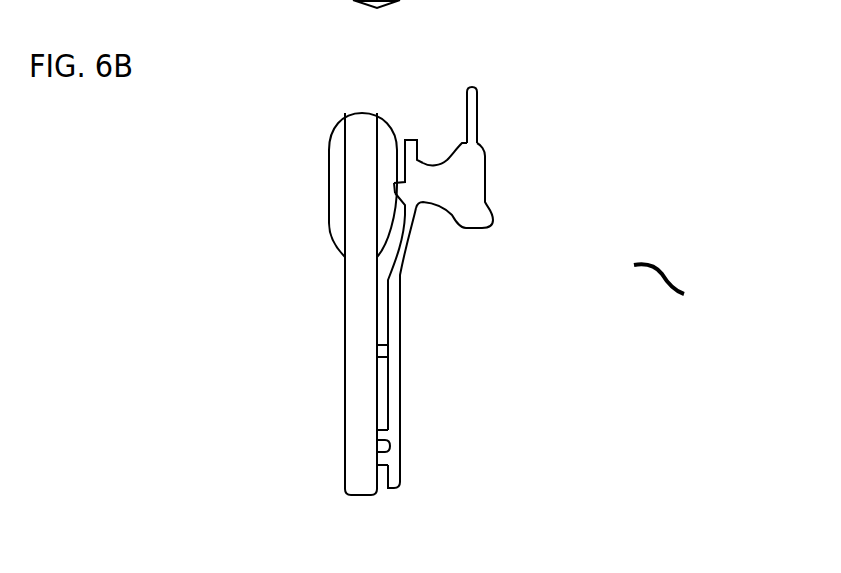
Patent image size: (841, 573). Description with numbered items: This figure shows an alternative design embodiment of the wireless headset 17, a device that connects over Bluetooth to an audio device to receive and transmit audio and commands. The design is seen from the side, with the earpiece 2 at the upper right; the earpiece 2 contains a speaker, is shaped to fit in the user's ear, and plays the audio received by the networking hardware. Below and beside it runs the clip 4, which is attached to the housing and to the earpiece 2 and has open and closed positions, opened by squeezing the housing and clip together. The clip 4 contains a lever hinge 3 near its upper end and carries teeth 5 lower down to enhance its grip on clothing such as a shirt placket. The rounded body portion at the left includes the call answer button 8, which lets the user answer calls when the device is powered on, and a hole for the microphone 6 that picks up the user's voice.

The earpiece 2 is at (452, 183).
The lever hinge 3 is at (396, 180).
The clip 4 is at (401, 327).
The teeth 5 is at (392, 438).
The microphone 6 is at (355, 443).
The call answer button 8 is at (333, 182).
The wireless headset 17 is at (680, 285).